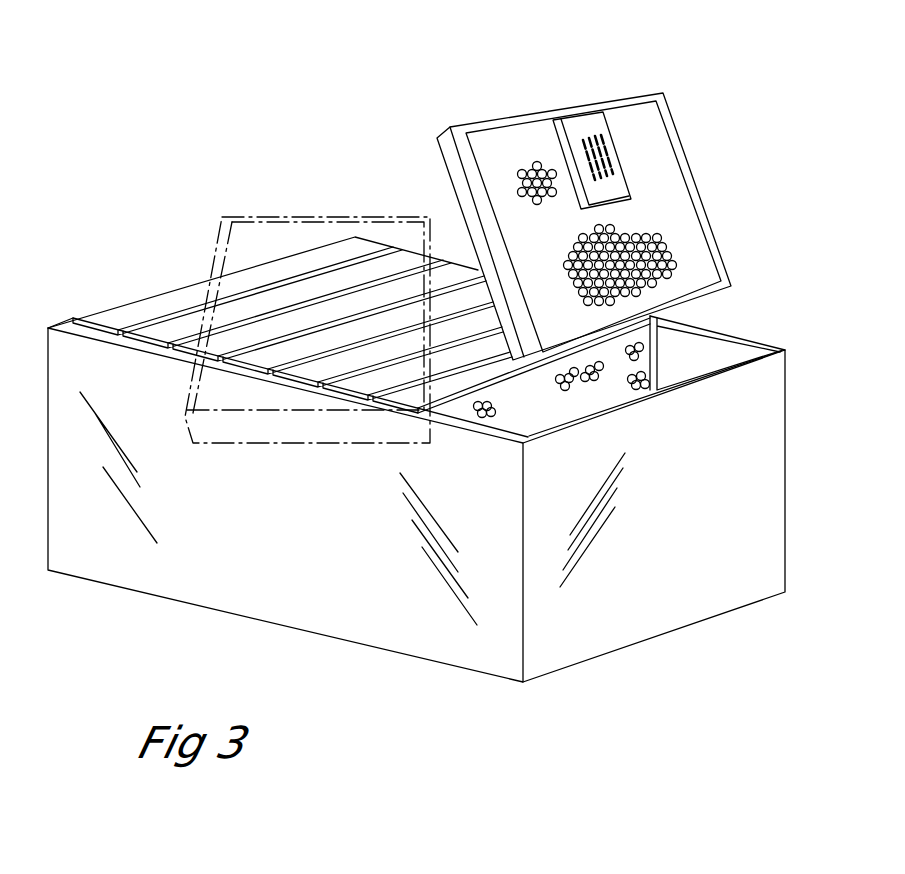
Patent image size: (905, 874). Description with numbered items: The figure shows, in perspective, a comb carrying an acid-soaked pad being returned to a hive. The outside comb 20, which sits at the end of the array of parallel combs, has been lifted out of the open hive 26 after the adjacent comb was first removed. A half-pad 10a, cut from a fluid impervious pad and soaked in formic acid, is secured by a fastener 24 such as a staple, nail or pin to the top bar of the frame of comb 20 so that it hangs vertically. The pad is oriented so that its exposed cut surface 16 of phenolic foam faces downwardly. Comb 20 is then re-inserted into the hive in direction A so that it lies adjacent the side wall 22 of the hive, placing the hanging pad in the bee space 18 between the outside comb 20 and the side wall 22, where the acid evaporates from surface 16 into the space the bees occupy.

The half-pad 10a is at (612, 151).
The exposed cut surface 16 is at (650, 120).
The bee space 18 is at (757, 333).
The outside comb 20 is at (632, 90).
The side wall 22 is at (730, 480).
The fastener 24 is at (582, 122).
The open hive 26 is at (410, 158).
The direction of insertion A is at (528, 102).